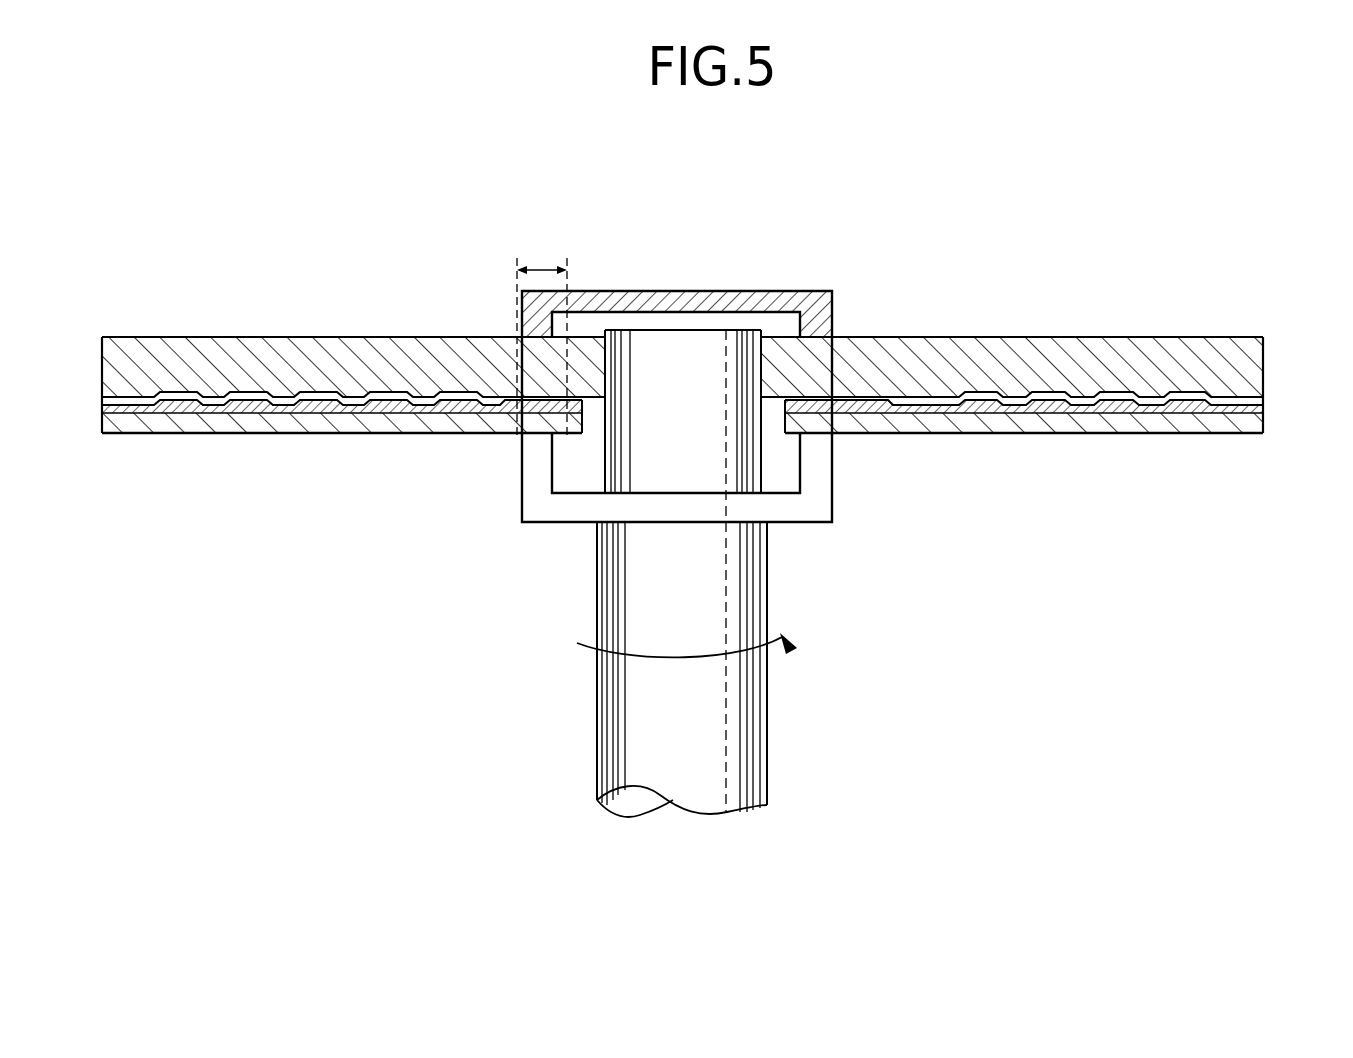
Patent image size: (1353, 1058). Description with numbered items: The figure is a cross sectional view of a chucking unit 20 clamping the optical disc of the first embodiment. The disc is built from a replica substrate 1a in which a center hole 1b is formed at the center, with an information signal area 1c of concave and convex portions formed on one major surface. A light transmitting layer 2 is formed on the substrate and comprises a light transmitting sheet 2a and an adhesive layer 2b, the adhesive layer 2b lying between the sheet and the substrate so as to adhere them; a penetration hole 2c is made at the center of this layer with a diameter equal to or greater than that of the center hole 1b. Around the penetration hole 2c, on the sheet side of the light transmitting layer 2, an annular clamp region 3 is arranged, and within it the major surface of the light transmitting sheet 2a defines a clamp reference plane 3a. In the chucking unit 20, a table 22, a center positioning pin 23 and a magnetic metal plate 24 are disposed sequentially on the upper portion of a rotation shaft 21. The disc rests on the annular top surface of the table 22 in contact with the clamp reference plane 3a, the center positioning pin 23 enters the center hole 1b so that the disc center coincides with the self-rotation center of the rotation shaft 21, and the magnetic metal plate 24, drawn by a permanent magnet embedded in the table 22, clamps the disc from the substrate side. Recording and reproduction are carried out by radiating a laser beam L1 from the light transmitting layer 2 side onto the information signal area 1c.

The replica substrate 1a is at (377, 352).
The center hole 1b is at (617, 352).
The information signal area 1c is at (318, 392).
The light transmitting layer 2 is at (138, 500).
The light transmitting sheet 2a is at (157, 434).
The adhesive layer 2b is at (245, 412).
The penetration hole 2c is at (780, 412).
The clamp region 3 is at (540, 267).
The clamp reference plane 3a is at (540, 435).
The chucking unit 20 is at (208, 222).
The rotation shaft 21 is at (730, 750).
The table 22 is at (816, 494).
The center positioning pin 23 is at (627, 463).
The magnetic metal plate 24 is at (830, 301).
The laser beam L1 is at (1127, 487).